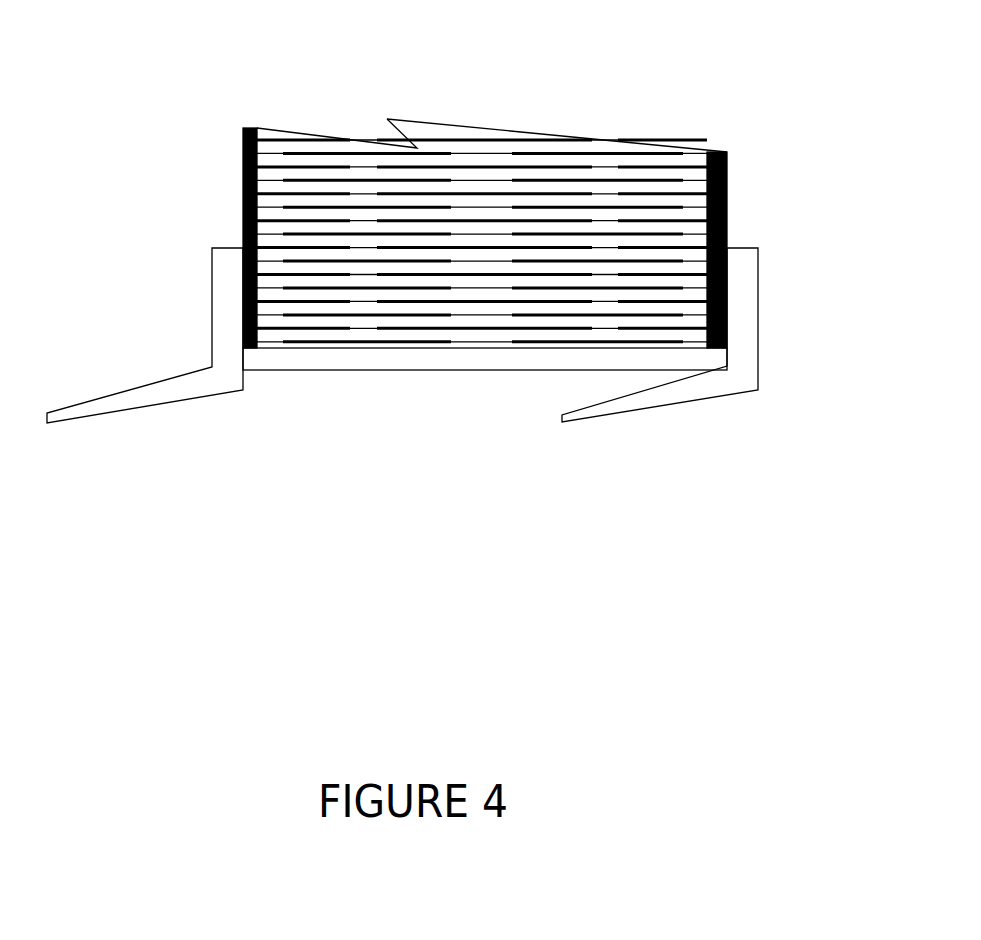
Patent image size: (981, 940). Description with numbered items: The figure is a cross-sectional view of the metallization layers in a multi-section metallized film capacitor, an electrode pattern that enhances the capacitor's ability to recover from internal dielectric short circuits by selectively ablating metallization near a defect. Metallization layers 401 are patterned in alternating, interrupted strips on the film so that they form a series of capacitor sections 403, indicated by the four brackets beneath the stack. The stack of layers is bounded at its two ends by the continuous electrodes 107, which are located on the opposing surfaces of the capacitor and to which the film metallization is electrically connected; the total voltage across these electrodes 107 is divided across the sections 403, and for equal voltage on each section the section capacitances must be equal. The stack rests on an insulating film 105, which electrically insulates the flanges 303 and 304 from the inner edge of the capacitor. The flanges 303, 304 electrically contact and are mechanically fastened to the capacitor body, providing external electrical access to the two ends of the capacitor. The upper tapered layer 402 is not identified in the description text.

The insulating film 105 is at (282, 362).
The continuous electrodes 107 is at (243, 183).
The flange 303 is at (735, 382).
The flange 304 is at (113, 402).
The metallization layers 401 is at (440, 142).
The top electrode layer 402 is at (595, 148).
The capacitor sections 403 is at (262, 440).